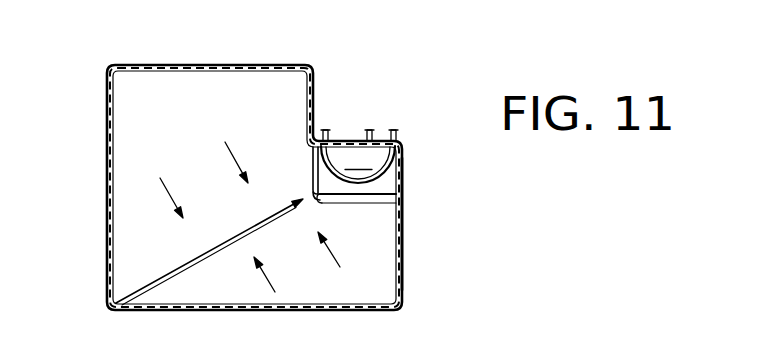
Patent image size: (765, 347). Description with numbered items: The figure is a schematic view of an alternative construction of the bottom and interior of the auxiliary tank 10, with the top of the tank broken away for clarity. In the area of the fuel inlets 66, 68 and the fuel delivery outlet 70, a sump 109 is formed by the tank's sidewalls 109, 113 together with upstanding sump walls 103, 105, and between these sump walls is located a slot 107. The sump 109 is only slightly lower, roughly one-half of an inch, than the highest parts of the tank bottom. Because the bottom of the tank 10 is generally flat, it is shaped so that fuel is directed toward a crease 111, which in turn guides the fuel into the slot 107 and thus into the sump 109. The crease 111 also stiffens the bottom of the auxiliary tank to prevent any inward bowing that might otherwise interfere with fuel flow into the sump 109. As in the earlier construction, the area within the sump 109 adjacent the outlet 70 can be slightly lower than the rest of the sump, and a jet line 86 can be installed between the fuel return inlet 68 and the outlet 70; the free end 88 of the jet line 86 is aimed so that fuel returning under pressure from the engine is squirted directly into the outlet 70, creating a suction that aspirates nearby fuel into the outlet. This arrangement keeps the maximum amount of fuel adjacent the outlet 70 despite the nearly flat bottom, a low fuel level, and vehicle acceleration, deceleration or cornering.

The auxiliary tank 10 is at (107, 137).
The fuel inlet 66 is at (369, 130).
The fuel return inlet 68 is at (393, 130).
The fuel delivery outlet 70 is at (327, 130).
The jet line 86 is at (378, 178).
The free end 88 is at (320, 153).
The upstanding sump wall 103 is at (312, 181).
The upstanding sump wall 105 is at (357, 205).
The slot 107 is at (314, 200).
The sump 109 is at (345, 141).
The crease 111 is at (182, 268).
The sidewall 113 is at (402, 171).